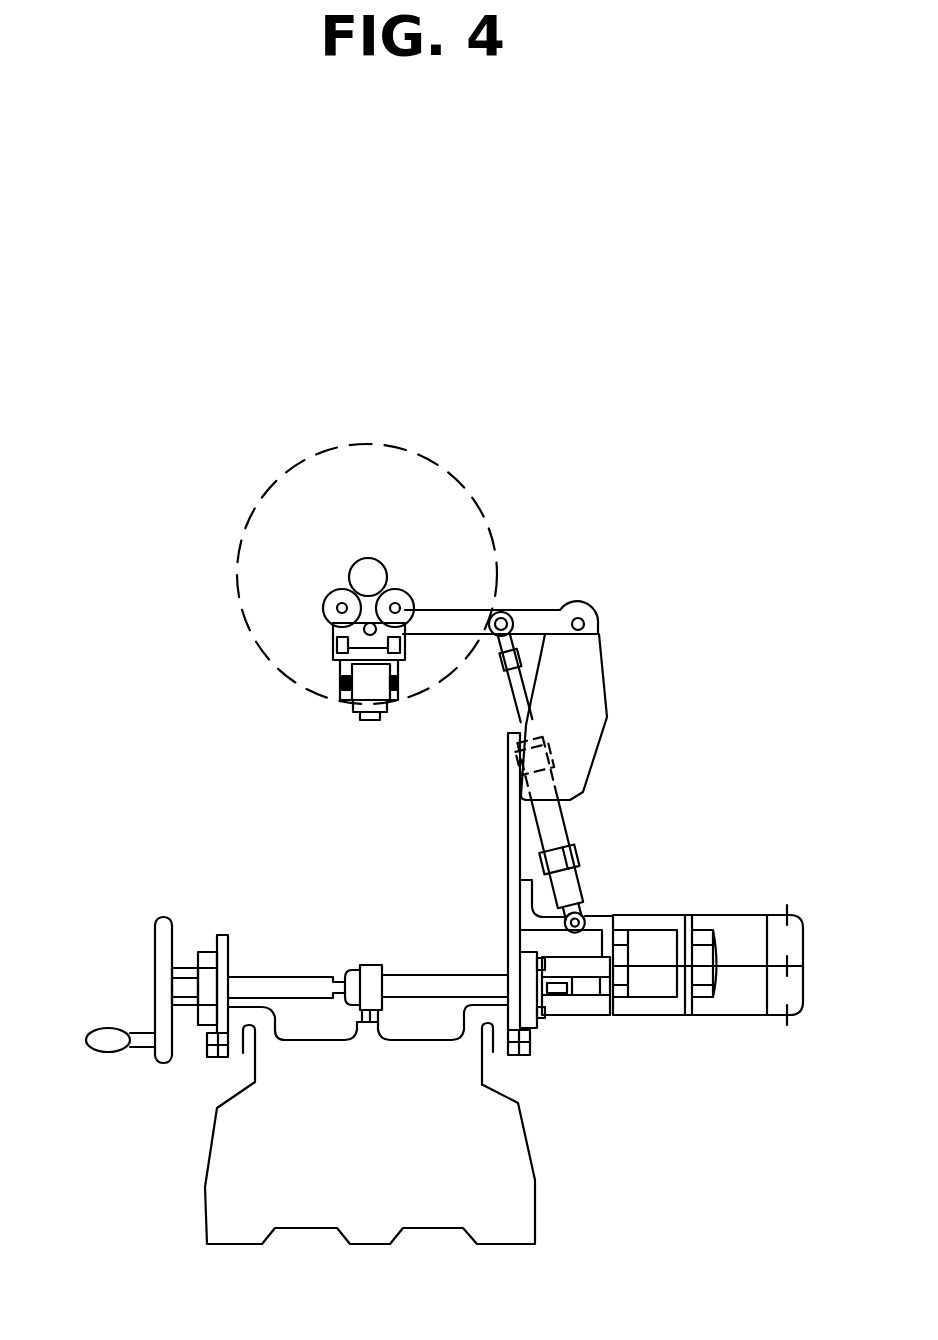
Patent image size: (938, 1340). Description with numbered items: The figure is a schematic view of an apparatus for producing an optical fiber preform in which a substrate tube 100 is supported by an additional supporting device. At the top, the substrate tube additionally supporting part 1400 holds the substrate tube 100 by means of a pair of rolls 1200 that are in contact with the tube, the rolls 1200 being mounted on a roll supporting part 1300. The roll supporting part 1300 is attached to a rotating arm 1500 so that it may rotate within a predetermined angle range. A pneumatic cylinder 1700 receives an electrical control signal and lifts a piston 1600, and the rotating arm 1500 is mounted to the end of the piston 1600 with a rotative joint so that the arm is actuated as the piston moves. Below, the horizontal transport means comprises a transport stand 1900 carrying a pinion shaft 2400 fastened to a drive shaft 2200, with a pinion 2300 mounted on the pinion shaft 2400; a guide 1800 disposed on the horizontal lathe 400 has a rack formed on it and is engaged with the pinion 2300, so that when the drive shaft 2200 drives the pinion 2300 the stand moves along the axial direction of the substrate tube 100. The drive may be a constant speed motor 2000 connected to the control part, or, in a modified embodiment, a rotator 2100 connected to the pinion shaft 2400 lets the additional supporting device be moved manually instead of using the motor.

The substrate tube 100 is at (368, 558).
The horizontal lathe 400 is at (535, 1143).
The rolls 1200 is at (388, 611).
The roll supporting part 1300 is at (335, 655).
The substrate tube additionally supporting part 1400 is at (263, 537).
The rotating arm 1500 is at (440, 610).
The piston 1600 is at (546, 612).
The pneumatic cylinder 1700 is at (543, 785).
The guide 1800 is at (373, 1027).
The transport stand 1900 is at (200, 826).
The constant speed motor 2000 is at (690, 912).
The rotator 2100 is at (157, 947).
The drive shaft 2200 is at (588, 997).
The pinion 2300 is at (373, 965).
The pinion shaft 2400 is at (310, 975).